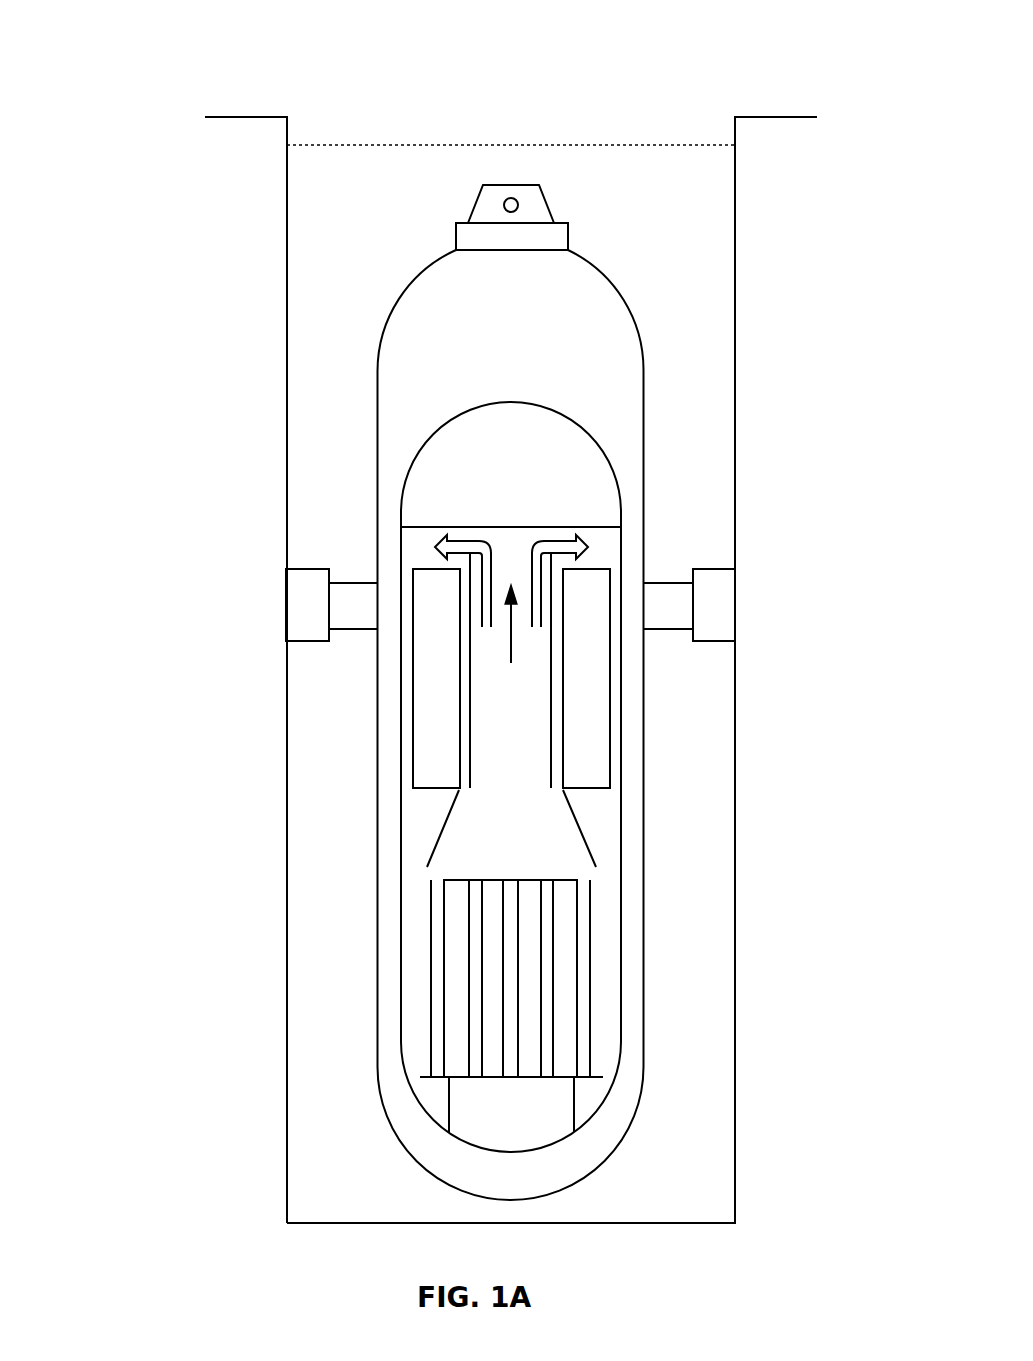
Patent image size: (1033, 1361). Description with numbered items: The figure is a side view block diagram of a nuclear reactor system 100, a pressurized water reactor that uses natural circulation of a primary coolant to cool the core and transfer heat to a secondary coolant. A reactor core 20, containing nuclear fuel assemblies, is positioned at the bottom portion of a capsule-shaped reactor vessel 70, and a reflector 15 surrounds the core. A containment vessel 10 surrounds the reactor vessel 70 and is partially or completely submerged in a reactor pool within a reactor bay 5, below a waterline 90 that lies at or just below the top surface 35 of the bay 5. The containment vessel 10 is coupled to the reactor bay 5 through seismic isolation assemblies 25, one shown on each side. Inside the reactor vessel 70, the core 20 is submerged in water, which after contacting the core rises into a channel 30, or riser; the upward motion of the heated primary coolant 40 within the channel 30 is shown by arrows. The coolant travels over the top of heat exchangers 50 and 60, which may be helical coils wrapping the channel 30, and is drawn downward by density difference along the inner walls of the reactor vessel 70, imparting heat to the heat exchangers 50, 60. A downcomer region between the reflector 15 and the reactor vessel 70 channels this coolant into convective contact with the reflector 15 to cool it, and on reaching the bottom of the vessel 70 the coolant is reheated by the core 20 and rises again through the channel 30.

The nuclear reactor system 100 is at (175, 55).
The waterline 90 is at (670, 145).
The top surface 35 is at (268, 120).
The reactor bay 5 is at (735, 605).
The seismic isolation assembly 25 is at (305, 561).
The containment vessel 10 is at (477, 1197).
The reactor vessel 70 is at (622, 1023).
The heat exchanger 50 is at (432, 631).
The heat exchanger 60 is at (590, 626).
The channel 30 is at (485, 657).
The primary coolant 40 is at (514, 642).
The reflector 15 is at (430, 933).
The reactor core 20 is at (443, 980).